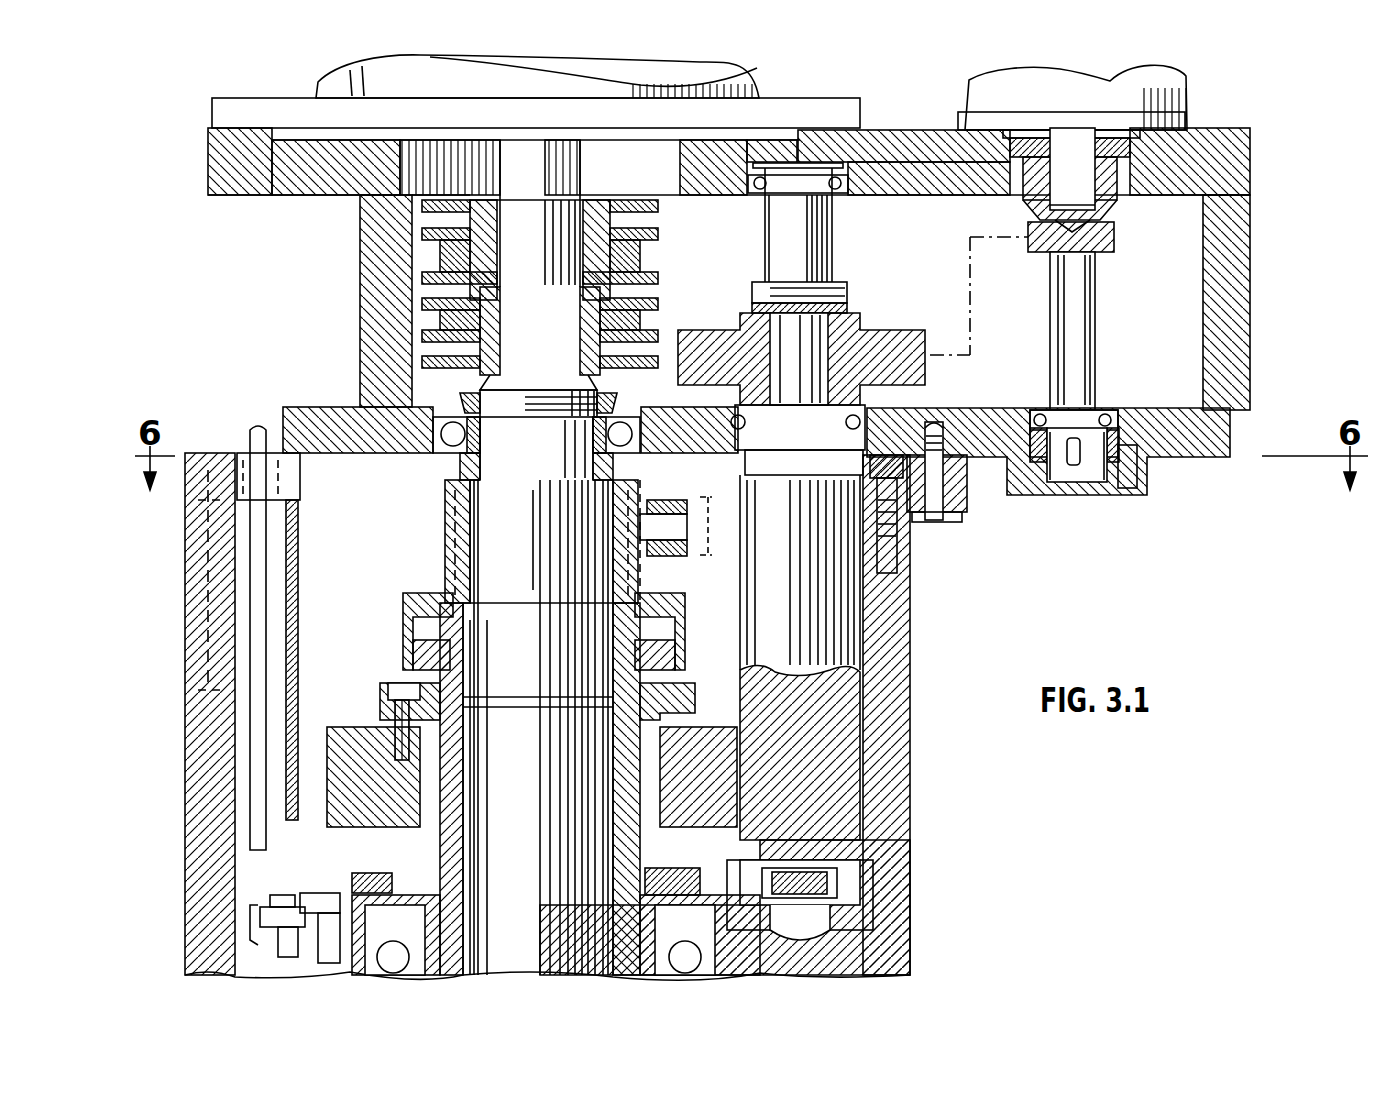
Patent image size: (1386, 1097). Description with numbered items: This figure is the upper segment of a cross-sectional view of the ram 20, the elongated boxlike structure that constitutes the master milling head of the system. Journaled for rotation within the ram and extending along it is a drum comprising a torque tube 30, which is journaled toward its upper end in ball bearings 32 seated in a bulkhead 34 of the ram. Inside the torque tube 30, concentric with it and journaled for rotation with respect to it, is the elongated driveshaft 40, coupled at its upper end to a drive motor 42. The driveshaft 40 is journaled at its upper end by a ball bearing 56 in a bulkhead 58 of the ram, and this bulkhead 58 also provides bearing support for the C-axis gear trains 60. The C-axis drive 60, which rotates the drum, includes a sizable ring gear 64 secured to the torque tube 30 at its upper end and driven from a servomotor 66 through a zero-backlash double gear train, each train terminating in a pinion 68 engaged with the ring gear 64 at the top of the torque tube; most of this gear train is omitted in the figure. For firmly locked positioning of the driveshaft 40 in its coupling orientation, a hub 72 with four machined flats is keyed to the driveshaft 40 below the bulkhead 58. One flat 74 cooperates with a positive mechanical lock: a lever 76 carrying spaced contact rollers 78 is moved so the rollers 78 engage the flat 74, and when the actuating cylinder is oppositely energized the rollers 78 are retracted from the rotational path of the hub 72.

The ram 20 is at (912, 803).
The torque tube 30 is at (440, 845).
The ball bearings 32 is at (380, 935).
The bulkhead 34 is at (905, 942).
The driveshaft 40 is at (548, 744).
The drive motor 42 is at (448, 92).
The ball bearing 56 is at (440, 453).
The bulkhead 58 is at (355, 453).
The C-axis gear trains 60 is at (962, 318).
The ring gear 64 is at (335, 748).
The servomotor 66 is at (1036, 108).
The pinion 68 is at (740, 718).
The hub 72 is at (445, 537).
The flat 74 is at (642, 580).
The lever 76 is at (664, 500).
The contact rollers 78 is at (690, 530).